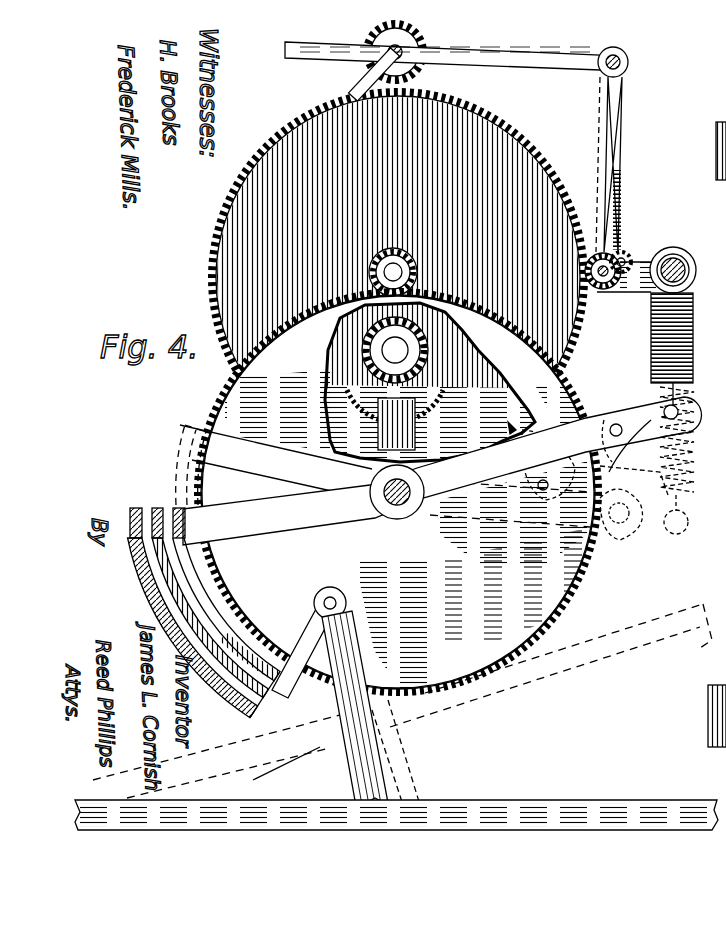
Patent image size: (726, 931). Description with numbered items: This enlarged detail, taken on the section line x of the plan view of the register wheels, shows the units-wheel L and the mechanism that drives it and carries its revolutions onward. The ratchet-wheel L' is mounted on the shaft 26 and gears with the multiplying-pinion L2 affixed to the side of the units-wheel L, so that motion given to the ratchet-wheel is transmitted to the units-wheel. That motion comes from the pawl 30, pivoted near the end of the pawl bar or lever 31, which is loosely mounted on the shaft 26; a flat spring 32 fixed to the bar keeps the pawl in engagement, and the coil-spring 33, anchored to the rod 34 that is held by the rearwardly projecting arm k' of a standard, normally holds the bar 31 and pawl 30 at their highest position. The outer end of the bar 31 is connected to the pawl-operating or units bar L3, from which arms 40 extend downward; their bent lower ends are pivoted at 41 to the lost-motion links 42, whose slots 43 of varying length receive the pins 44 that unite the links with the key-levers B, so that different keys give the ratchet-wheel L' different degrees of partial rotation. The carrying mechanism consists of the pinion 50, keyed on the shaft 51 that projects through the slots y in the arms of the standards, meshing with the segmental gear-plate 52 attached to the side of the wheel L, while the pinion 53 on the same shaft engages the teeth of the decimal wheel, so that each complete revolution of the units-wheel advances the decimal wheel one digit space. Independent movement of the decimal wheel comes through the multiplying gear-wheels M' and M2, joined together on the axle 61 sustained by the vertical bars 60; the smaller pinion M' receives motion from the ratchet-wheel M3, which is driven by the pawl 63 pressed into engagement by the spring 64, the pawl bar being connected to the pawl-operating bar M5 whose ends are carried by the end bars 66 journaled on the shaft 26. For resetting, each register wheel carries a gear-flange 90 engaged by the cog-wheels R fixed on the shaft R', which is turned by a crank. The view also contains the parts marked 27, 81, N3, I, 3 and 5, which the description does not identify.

The units-wheel L is at (398, 278).
The ratchet-wheel L' is at (399, 492).
The multiplying-pinion L2 is at (420, 276).
The pawl-operating bar L3 is at (186, 528).
The pinion gear 27 is at (392, 262).
The gear-flange 90 is at (508, 160).
The segmental gear-plate 52 is at (559, 188).
The vertical bars 60 is at (430, 382).
The axle 61 is at (395, 350).
The multiplying gear-wheel (pinion) M' is at (472, 338).
The multiplying gear-wheel M2 is at (468, 355).
The ratchet-wheel M3 is at (565, 400).
The pawl-operating bar M5 is at (160, 510).
The segment bar N3 is at (135, 512).
The pawl 63 is at (515, 428).
The spring 64 is at (539, 425).
The pawl bar or lever 31 is at (630, 428).
The shaft 26 is at (400, 516).
The pawl 30 is at (626, 446).
The flat spring 32 is at (647, 461).
The end bars 66 is at (178, 595).
The segment end 81 is at (246, 702).
The arms 40 is at (192, 585).
The pivot 41 is at (347, 600).
The lost-motion links 42 is at (355, 708).
The slots 43 is at (348, 785).
The pins 44 is at (390, 804).
The key-levers B is at (470, 800).
The shaft R' is at (406, 46).
The cog-wheels R is at (411, 67).
The crank arm I is at (352, 80).
The bar 5 is at (470, 56).
The link 3 is at (622, 160).
The pinion 50 is at (603, 282).
The shaft 51 is at (606, 282).
The pinion 53 is at (628, 250).
The rod 34 is at (678, 258).
The coil-spring 33 is at (684, 338).
The slots y is at (628, 262).
The arm k' is at (639, 231).
The section line x is at (702, 680).